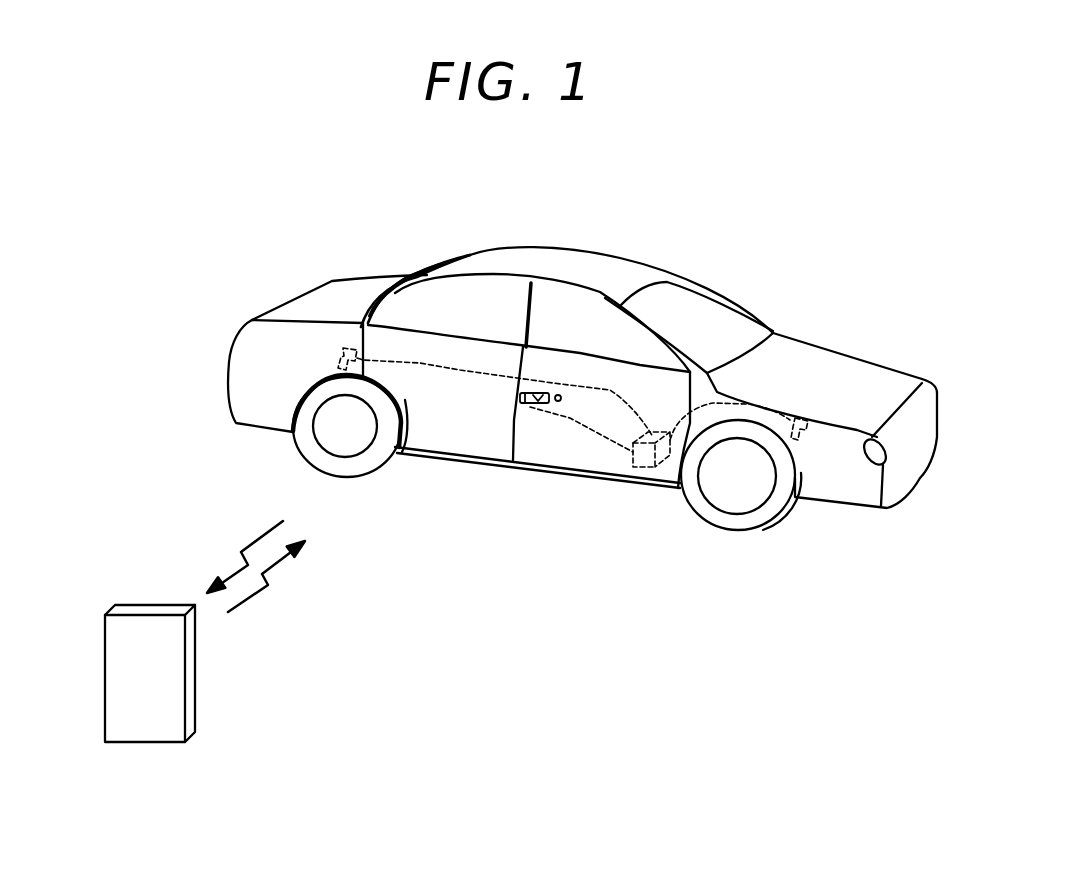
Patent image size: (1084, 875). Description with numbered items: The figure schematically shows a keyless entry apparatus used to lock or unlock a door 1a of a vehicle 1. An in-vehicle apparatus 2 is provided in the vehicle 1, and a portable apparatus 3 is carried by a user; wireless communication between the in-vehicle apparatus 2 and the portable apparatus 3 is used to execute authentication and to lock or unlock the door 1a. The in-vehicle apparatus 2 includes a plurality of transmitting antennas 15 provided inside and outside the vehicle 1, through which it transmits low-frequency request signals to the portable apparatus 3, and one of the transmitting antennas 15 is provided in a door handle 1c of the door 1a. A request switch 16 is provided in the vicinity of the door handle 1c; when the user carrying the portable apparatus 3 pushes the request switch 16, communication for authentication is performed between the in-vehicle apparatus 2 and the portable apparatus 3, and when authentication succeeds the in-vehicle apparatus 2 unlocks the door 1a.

The vehicle 1 is at (600, 252).
The door 1a is at (617, 462).
The door handle 1c is at (533, 404).
The in-vehicle apparatus 2 is at (665, 468).
The portable apparatus 3 is at (134, 610).
The transmitting antennas 15 is at (338, 355).
The request switch 16 is at (559, 402).